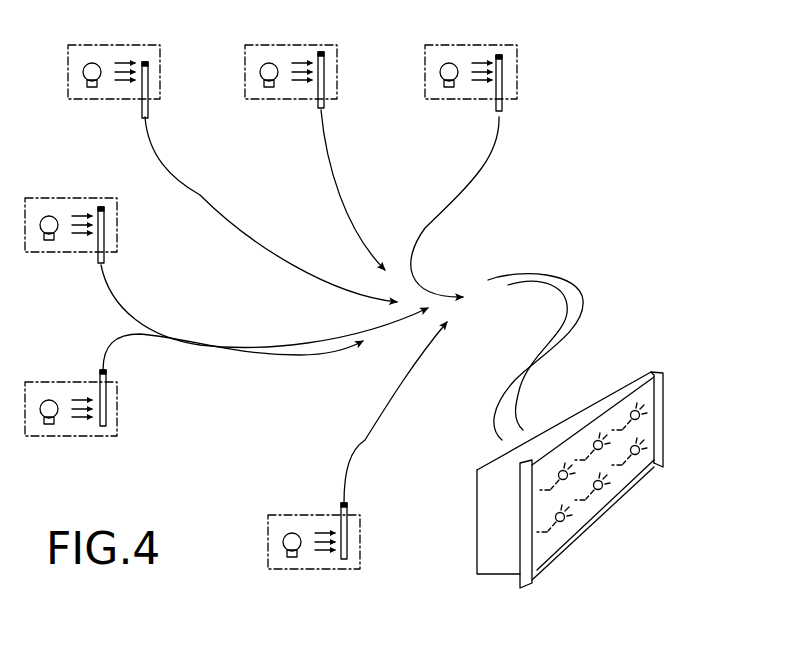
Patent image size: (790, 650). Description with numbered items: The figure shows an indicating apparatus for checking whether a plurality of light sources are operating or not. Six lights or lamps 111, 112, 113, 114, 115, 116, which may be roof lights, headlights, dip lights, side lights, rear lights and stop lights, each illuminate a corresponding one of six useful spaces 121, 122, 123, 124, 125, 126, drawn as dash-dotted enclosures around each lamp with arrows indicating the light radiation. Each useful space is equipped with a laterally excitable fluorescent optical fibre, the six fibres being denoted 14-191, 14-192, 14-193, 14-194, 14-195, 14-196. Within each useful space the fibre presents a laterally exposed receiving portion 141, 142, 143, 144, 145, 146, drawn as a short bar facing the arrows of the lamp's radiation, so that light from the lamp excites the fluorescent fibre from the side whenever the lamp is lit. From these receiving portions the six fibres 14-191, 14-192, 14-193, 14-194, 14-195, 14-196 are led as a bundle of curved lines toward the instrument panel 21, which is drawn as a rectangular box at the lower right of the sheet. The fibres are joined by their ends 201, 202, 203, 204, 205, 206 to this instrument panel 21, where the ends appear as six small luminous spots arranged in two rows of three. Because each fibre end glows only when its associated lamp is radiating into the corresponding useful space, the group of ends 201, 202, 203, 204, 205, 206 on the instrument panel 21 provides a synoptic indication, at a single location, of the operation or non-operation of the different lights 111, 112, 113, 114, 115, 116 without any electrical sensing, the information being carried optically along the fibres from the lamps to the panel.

The lamp 111 is at (291, 533).
The lamp 112 is at (45, 401).
The lamp 113 is at (45, 217).
The lamp 114 is at (91, 63).
The lamp 115 is at (268, 63).
The lamp 116 is at (448, 63).
The useful space 121 is at (329, 571).
The useful space 122 is at (73, 440).
The useful space 123 is at (26, 242).
The useful space 124 is at (67, 87).
The useful space 125 is at (245, 85).
The useful space 126 is at (425, 86).
The light guide input end 1 141 is at (347, 537).
The light guide input end 2 142 is at (106, 402).
The light guide input end 3 143 is at (104, 232).
The light guide input end 4 144 is at (148, 80).
The light guide input end 5 145 is at (324, 78).
The light guide input end 6 146 is at (502, 78).
The laterally excitable fluorescent optical fibre 14-191 is at (360, 436).
The laterally excitable fluorescent optical fibre 14-192 is at (212, 356).
The laterally excitable fluorescent optical fibre 14-193 is at (188, 338).
The laterally excitable fluorescent optical fibre 14-194 is at (237, 198).
The laterally excitable fluorescent optical fibre 14-195 is at (333, 198).
The laterally excitable fluorescent optical fibre 14-196 is at (462, 186).
The fibre end 201 is at (565, 470).
The fibre end 202 is at (603, 440).
The fibre end 203 is at (641, 413).
The fibre end 204 is at (561, 523).
The fibre end 205 is at (603, 491).
The fibre end 206 is at (638, 456).
The display panel 21 is at (518, 578).